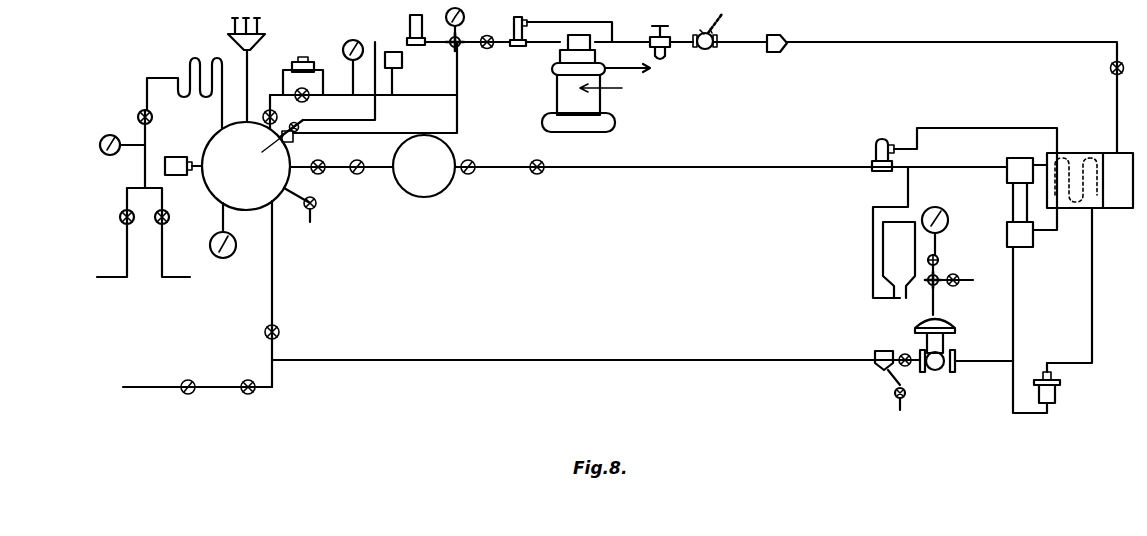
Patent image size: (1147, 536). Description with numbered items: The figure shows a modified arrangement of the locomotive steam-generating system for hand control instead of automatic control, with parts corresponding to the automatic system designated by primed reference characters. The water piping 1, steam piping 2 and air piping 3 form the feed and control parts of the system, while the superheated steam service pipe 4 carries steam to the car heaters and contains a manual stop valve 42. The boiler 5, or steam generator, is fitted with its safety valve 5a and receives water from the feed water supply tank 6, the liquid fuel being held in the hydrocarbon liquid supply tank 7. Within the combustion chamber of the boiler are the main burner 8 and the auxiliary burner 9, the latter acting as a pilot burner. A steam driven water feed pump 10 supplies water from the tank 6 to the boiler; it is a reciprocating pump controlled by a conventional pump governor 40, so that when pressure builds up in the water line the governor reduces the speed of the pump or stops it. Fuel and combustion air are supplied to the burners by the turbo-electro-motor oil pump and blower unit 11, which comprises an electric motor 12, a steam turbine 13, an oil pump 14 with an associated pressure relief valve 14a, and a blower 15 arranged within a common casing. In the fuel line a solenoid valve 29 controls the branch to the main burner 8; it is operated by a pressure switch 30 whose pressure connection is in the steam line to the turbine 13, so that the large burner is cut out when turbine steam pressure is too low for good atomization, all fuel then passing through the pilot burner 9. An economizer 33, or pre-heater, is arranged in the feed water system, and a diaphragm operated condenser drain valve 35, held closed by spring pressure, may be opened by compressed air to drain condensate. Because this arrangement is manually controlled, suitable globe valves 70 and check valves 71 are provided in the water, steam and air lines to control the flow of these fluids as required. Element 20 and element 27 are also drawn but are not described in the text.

The water piping 1 is at (675, 170).
The steam piping 2 is at (612, 362).
The air piping 3 is at (152, 388).
The superheated steam service pipe 4 is at (190, 60).
The boiler 5 is at (256, 218).
The safety valve 5a is at (259, 20).
The feed water supply tank 6 is at (1062, 153).
The hydrocarbon liquid supply tank 7 is at (1115, 208).
The main burner 8 is at (263, 159).
The auxiliary burner 9 is at (296, 143).
The steam driven water feed pump 10 is at (1021, 190).
The turbo-electro-motor oil pump and blower unit 11 is at (617, 89).
The electric motor 12 is at (590, 102).
The steam turbine 13 is at (563, 70).
The oil pump 14 is at (583, 40).
The pressure relief valve 14a is at (522, 17).
The blower 15 is at (598, 124).
The motor 20 is at (176, 157).
The pressure regulator 27 is at (305, 57).
The solenoid valve 29 is at (410, 24).
The pressure switch 30 is at (402, 60).
The economizer 33 is at (440, 188).
The condenser drain valve 35 is at (878, 372).
The pump governor 40 is at (944, 352).
The manual stop valve 42 is at (137, 115).
The globe valve 70 is at (299, 130).
The check valve 71 is at (357, 175).